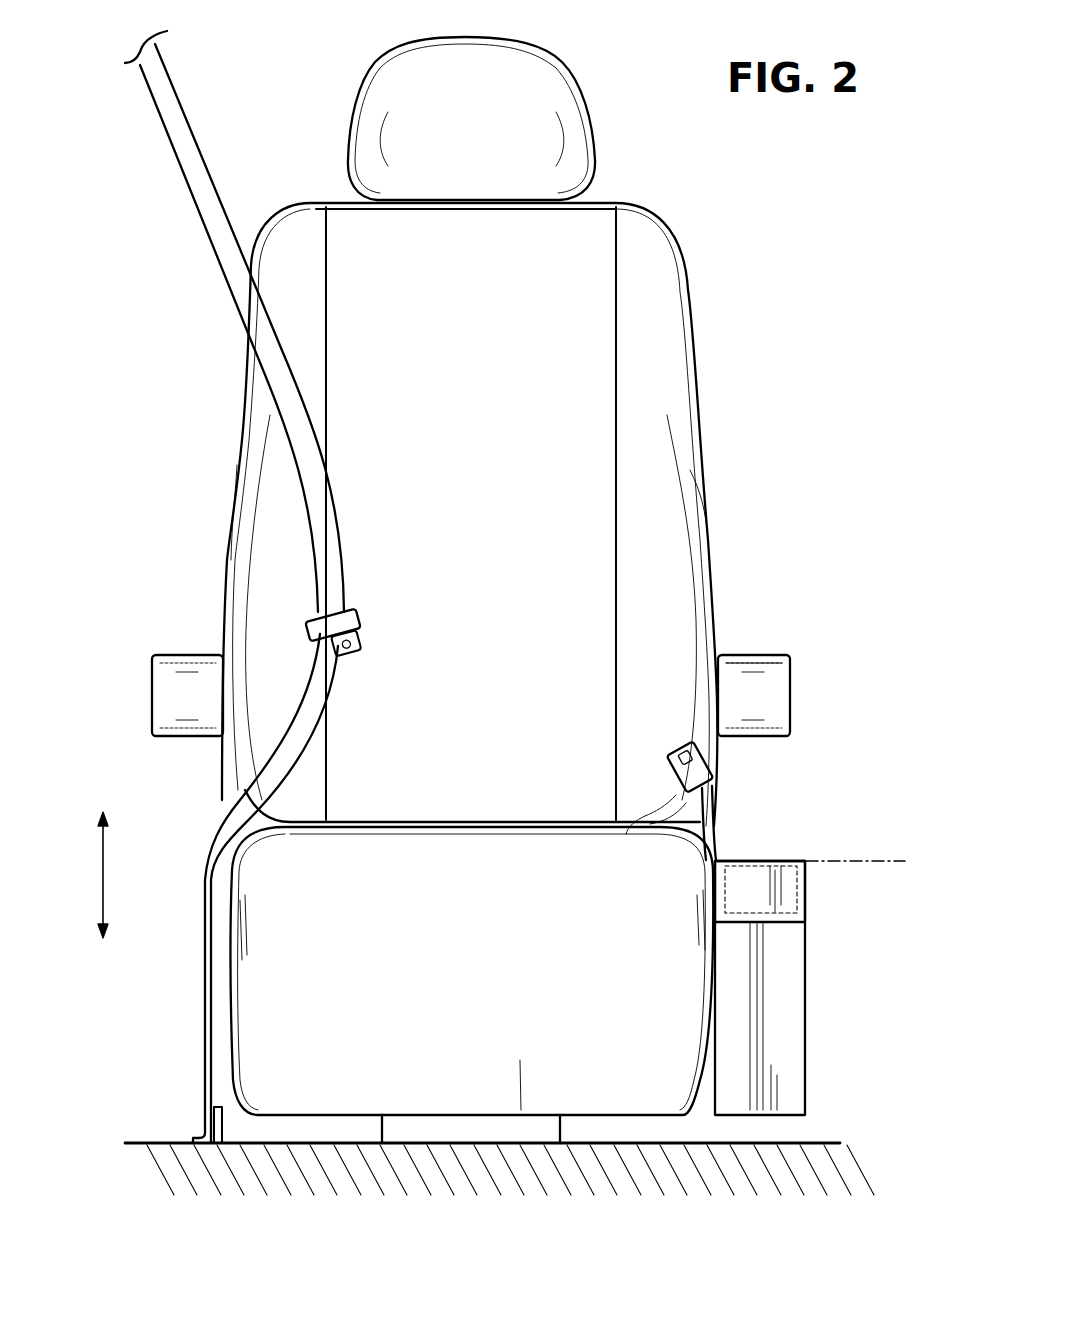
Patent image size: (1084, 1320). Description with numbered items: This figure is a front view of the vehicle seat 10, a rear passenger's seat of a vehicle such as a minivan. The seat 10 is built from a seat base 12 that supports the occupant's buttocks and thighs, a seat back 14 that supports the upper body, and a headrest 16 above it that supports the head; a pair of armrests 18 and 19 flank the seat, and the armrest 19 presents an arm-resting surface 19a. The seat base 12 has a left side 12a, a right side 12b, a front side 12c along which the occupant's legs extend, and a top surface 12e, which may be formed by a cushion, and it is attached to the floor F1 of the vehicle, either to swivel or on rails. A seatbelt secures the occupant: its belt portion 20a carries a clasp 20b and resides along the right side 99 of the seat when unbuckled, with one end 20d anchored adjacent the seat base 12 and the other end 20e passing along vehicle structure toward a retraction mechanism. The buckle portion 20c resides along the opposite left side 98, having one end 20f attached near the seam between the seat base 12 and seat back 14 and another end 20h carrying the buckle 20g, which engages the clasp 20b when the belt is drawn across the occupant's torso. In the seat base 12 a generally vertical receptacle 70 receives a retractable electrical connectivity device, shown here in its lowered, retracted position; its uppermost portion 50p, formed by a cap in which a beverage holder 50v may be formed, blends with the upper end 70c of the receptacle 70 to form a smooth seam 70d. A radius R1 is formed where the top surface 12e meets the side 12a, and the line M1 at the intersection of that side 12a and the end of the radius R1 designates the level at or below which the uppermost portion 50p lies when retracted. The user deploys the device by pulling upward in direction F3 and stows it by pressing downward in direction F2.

The vehicle seat 10 is at (799, 257).
The seat base 12 is at (366, 1117).
The left side 12a is at (705, 1070).
The right side 12b is at (233, 947).
The front side 12c is at (532, 1066).
The top surface 12e is at (453, 820).
The seat back 14 is at (273, 219).
The headrest 16 is at (518, 82).
The armrest 18 is at (190, 655).
The armrest 19 is at (795, 650).
The arm-resting surface 19a is at (755, 655).
The belt portion 20a is at (262, 333).
The clasp 20b is at (362, 628).
The buckle portion 20c is at (672, 738).
The end of the belt portion 20d is at (204, 916).
The end of the belt portion 20e is at (165, 82).
The end of the buckle portion 20f is at (717, 847).
The buckle 20g is at (680, 768).
The end of the buckle portion 20h is at (703, 793).
The uppermost portion 50p is at (813, 845).
The beverage holder 50v is at (762, 890).
The receptacle 70 is at (786, 926).
The upper end of the receptacle 70c is at (785, 927).
The seam 70d is at (723, 923).
The left side of the seat 98 is at (708, 505).
The right side of the seat 99 is at (237, 463).
The radius R1 is at (712, 860).
The line M1 is at (858, 860).
The floor F1 is at (152, 1143).
The direction F2 is at (90, 933).
The direction F3 is at (90, 866).